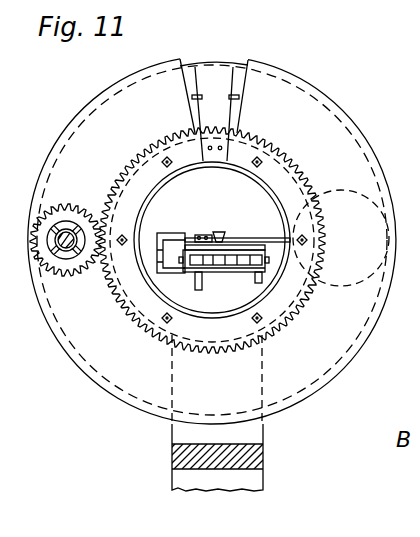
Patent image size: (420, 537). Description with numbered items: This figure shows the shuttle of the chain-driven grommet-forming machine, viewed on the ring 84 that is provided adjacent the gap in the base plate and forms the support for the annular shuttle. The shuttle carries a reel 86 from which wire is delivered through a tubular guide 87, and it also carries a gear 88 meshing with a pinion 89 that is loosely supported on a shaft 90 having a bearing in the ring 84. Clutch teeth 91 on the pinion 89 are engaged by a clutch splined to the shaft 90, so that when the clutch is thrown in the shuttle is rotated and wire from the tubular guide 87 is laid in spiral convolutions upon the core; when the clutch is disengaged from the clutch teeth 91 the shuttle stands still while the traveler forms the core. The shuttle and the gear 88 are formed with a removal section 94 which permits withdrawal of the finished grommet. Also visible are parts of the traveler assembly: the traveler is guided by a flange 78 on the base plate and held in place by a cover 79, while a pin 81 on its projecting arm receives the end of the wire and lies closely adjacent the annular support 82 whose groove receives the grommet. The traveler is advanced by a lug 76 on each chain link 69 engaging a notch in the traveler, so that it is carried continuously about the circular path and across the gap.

The ring 84 is at (337, 379).
The reel 86 is at (339, 288).
The gear 88 is at (124, 173).
The pinion 89 is at (56, 278).
The shaft 90 is at (64, 246).
The clutch teeth 91 is at (66, 224).
The removal section 94 is at (217, 72).
The flange 78 is at (157, 236).
The cover 79 is at (172, 233).
The pin 81 is at (201, 235).
The annular support 82 is at (223, 233).
The tubular guide 87 is at (276, 238).
The lug 76 is at (243, 266).
The link 69 is at (228, 268).